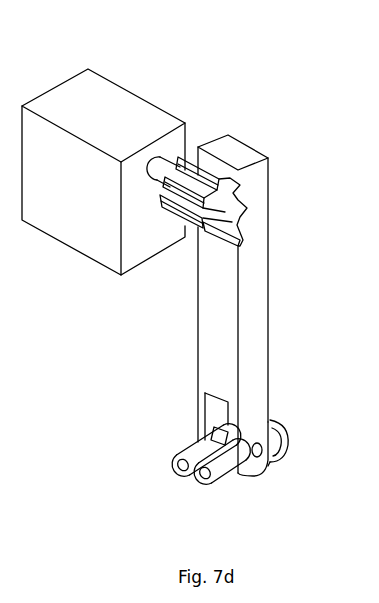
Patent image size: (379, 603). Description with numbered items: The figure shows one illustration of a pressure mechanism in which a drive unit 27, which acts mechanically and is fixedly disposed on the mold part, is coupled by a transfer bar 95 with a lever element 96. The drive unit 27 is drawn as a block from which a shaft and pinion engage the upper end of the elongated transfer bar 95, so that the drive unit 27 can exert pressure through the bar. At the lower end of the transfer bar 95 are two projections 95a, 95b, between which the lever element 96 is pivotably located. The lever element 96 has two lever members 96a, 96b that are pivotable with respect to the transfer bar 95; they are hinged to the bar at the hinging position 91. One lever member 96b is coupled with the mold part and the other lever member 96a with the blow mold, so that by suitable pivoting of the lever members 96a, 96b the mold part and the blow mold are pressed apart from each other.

The drive unit 27 is at (80, 92).
The transfer bar 95 is at (240, 305).
The projection 95a is at (258, 422).
The projection 95b is at (218, 405).
The lever element 96 is at (229, 478).
The lever member 96a is at (286, 427).
The lever member 96b is at (200, 443).
The hinging position 91 is at (270, 461).